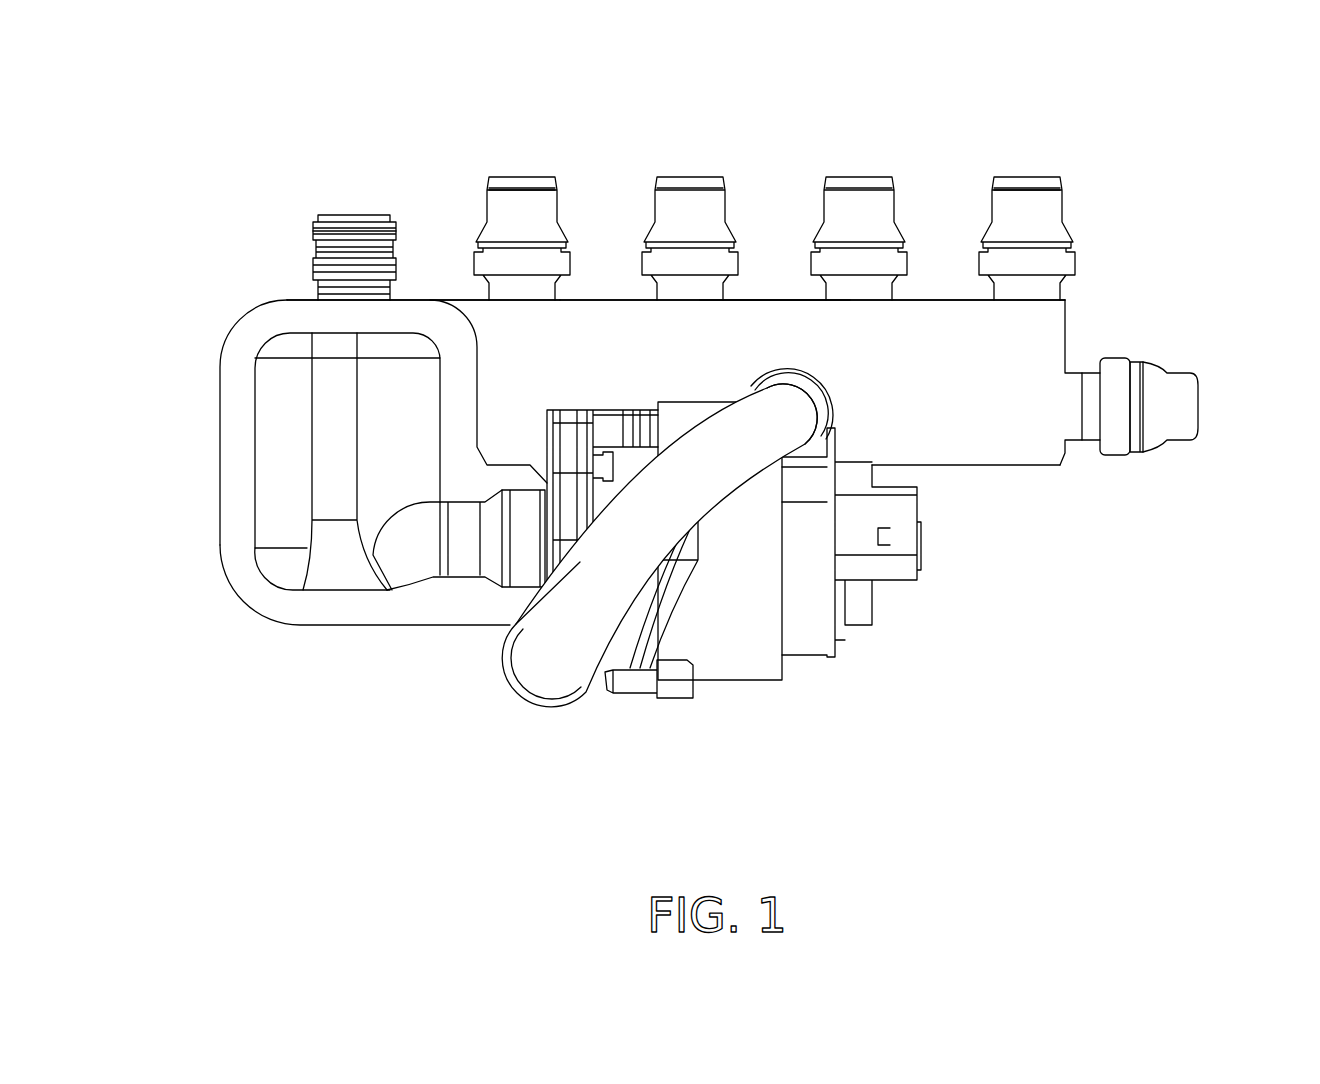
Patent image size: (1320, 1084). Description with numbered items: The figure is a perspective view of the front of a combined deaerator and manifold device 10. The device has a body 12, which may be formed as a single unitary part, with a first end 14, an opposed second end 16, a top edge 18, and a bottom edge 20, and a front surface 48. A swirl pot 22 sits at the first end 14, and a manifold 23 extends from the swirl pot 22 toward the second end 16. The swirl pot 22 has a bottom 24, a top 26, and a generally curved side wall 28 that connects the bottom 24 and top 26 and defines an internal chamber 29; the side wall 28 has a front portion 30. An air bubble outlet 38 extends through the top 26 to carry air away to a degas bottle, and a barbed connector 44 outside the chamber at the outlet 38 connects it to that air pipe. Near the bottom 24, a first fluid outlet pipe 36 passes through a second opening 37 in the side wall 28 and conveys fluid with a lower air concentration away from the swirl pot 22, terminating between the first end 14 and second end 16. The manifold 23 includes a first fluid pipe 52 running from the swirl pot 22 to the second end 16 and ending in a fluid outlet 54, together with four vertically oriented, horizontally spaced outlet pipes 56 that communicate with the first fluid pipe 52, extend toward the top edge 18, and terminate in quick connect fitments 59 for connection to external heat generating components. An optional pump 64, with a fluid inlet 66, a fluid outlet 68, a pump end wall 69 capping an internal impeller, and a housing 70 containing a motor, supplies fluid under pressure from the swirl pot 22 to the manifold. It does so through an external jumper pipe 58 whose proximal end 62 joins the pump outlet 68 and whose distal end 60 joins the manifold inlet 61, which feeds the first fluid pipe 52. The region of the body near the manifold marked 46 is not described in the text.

The combined deaerator and manifold device 10 is at (228, 153).
The body 12 is at (565, 350).
The first end 14 is at (223, 447).
The second end 16 is at (1068, 322).
The top edge 18 is at (607, 300).
The bottom edge 20 is at (963, 467).
The swirl pot 22 is at (208, 542).
The manifold 23 is at (945, 315).
The bottom 24 is at (343, 590).
The top 26 is at (438, 300).
The side wall 28 is at (280, 373).
The internal chamber 29 is at (300, 425).
The front portion 30 is at (285, 517).
The first fluid outlet pipe 36 is at (432, 553).
The second opening 37 is at (397, 548).
The air bubble outlet 38 is at (355, 213).
The barbed connector 44 is at (318, 235).
The rail side wall 46 is at (772, 318).
The front surface 48 is at (728, 348).
The first fluid pipe 52 is at (1105, 457).
The fluid outlet 54 is at (1208, 402).
The outlet pipes 56 is at (522, 175).
The jumper pipe 58 is at (705, 497).
The quick connect fitment 59 is at (1060, 203).
The distal end 60 is at (733, 423).
The manifold inlet 61 is at (802, 387).
The proximal end 62 is at (610, 675).
The pump 64 is at (720, 678).
The fluid inlet 66 is at (525, 555).
The fluid outlet 68 is at (552, 670).
The pump end wall 69 is at (573, 452).
The housing 70 is at (747, 628).